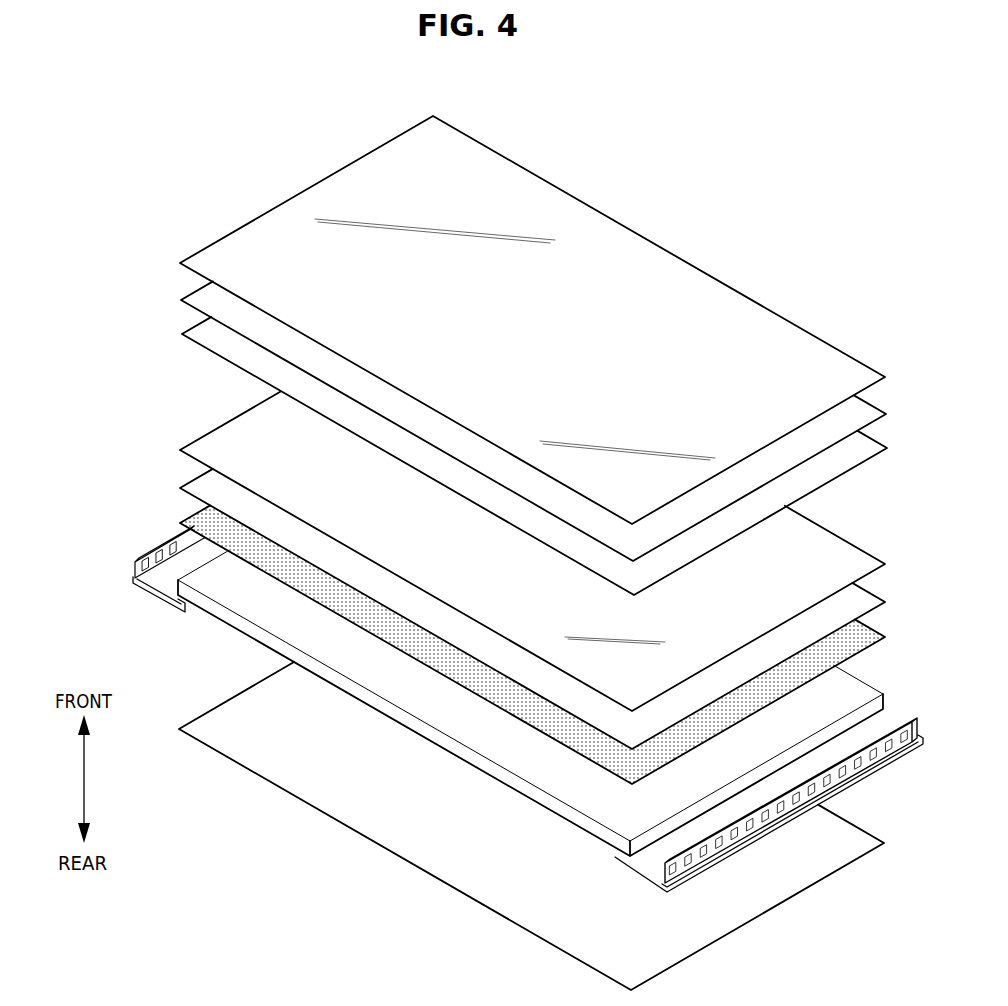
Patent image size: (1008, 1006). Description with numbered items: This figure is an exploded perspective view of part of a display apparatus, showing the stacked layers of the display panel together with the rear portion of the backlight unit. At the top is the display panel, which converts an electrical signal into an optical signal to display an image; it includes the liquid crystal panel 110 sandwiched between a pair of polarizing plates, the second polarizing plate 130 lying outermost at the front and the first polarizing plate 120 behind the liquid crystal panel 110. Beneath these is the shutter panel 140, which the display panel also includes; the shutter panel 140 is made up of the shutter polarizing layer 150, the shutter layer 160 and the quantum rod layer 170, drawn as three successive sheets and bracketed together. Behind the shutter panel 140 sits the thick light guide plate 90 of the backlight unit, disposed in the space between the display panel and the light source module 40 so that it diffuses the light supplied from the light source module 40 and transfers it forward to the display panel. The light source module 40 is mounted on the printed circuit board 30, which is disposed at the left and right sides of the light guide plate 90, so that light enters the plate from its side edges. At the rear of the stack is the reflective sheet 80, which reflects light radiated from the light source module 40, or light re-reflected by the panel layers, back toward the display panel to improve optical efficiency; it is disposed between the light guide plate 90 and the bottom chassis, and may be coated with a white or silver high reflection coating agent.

The second polarizing plate 130 is at (180, 263).
The liquid crystal panel 110 is at (181, 300).
The first polarizing plate 120 is at (182, 334).
The shutter panel 140 is at (62, 433).
The shutter polarizing layer 150 is at (180, 450).
The shutter layer 160 is at (180, 488).
The quantum rod layer 170 is at (180, 523).
The light source module 40 is at (133, 574).
The printed circuit board 30 is at (152, 600).
The light guide plate 90 is at (230, 622).
The reflective sheet 80 is at (228, 757).